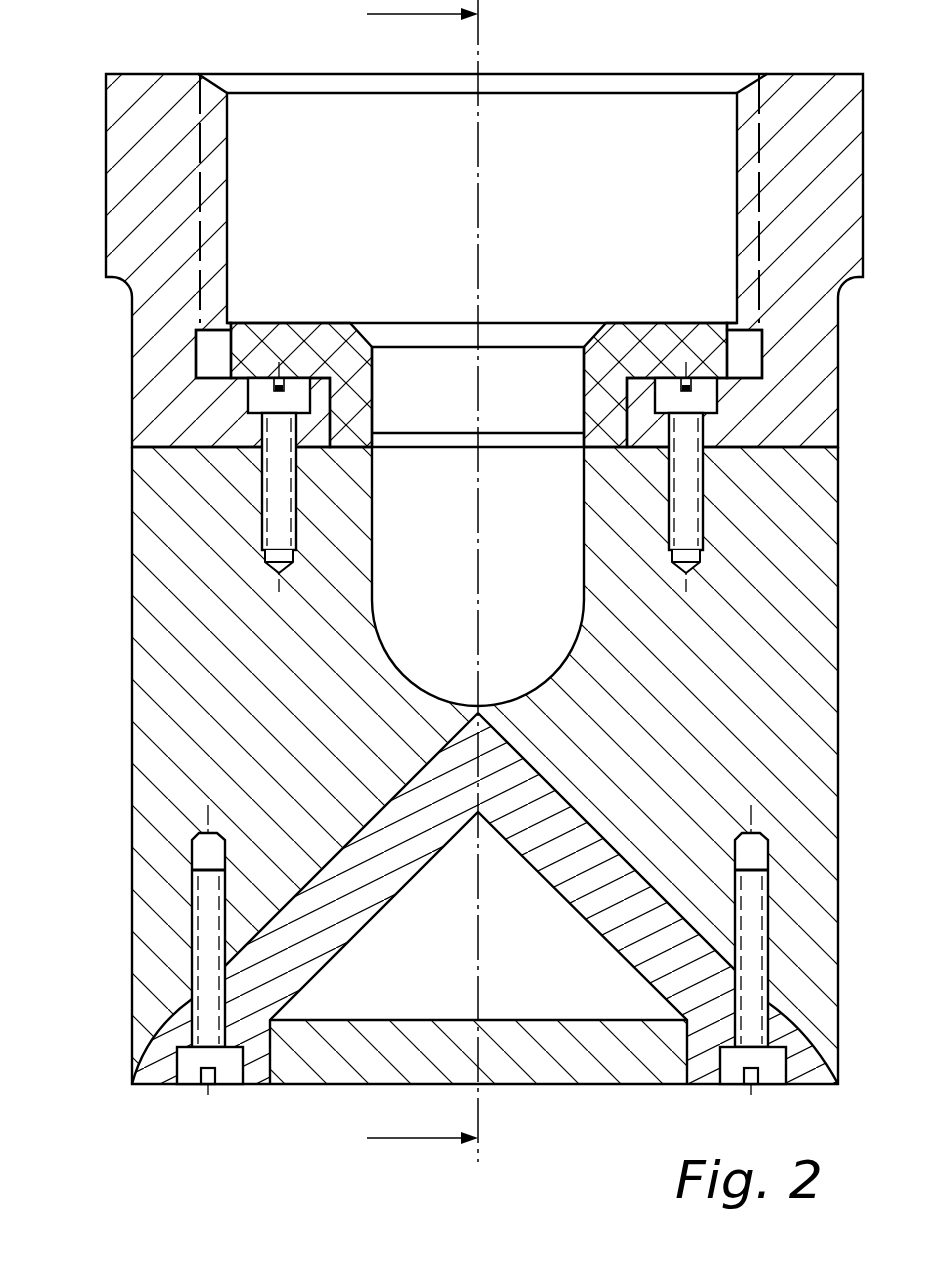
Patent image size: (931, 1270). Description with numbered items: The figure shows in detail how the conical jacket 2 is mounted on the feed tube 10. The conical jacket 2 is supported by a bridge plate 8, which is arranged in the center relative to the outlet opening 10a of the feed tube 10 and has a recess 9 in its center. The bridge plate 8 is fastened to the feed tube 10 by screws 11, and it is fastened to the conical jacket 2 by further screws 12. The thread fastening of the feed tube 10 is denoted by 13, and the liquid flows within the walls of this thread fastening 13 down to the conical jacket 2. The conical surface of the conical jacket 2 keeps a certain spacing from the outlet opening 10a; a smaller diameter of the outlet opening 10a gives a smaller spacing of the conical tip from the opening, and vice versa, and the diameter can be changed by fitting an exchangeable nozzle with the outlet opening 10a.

The conical jacket 2 is at (393, 787).
The bridge plate 8 is at (193, 514).
The recess 9 is at (430, 560).
The feed tube 10 is at (162, 143).
The outlet opening 10a is at (433, 392).
The screws 11 is at (260, 398).
The screws 12 is at (205, 951).
The thread fastening 13 is at (213, 217).